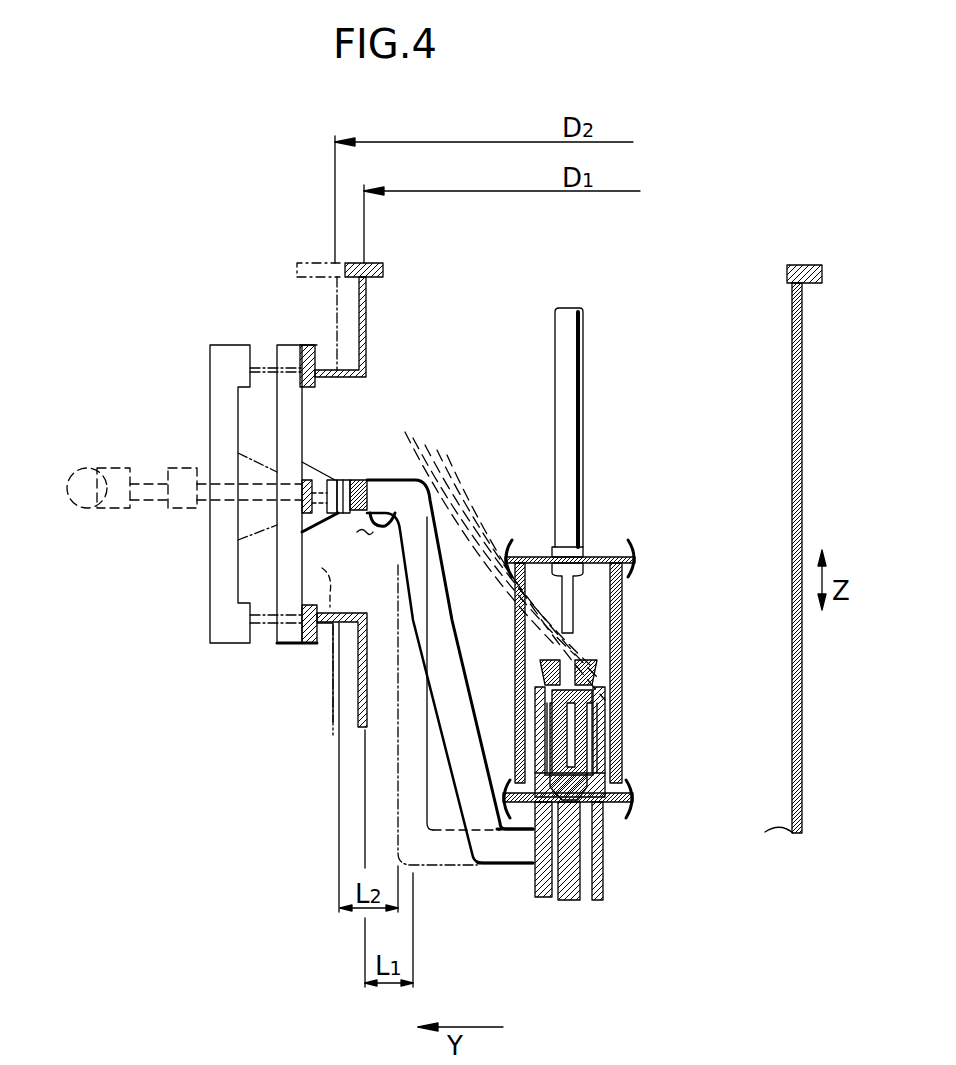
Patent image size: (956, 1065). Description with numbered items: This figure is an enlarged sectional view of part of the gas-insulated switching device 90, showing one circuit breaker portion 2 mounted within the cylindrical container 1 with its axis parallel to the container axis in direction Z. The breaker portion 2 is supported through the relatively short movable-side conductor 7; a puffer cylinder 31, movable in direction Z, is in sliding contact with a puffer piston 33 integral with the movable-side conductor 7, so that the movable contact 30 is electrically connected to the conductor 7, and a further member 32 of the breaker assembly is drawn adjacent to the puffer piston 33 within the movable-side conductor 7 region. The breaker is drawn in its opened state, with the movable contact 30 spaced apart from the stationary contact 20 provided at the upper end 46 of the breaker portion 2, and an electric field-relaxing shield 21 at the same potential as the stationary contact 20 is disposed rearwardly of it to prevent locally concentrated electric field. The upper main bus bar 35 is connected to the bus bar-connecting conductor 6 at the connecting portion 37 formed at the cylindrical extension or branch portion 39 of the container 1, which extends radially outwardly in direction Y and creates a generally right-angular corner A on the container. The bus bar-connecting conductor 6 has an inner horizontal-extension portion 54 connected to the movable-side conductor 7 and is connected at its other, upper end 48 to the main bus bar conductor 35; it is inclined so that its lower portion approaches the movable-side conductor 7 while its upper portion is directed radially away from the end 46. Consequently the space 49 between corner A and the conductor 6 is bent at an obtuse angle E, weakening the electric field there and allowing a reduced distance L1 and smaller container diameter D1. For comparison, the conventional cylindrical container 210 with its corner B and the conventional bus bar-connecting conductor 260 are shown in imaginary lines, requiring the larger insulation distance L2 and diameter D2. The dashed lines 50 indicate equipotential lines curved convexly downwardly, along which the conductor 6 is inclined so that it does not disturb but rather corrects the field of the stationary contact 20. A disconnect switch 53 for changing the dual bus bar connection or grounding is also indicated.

The cylindrical container 1 is at (802, 472).
The circuit breaker portion 2 is at (620, 710).
The bus bar-connecting conductor 6 is at (428, 507).
The movable-side conductor 7 is at (603, 878).
The stationary contact 20 is at (618, 606).
The electric field-relaxing shield 21 is at (505, 555).
The movable contact 30 is at (590, 680).
The puffer cylinder 31 is at (605, 747).
The valve stem 32 is at (580, 807).
The puffer piston 33 is at (590, 776).
The main bus bar 35 is at (115, 467).
The connecting portion 37 is at (275, 630).
The cylindrical extension 39 is at (364, 378).
The upper end of breaker portion 46 is at (575, 547).
The other end of bus bar-connecting conductor 48 is at (362, 480).
The space 49 is at (390, 607).
The equipotential lines 50 is at (427, 433).
The disconnect switch 53 is at (176, 508).
The inner horizontal-extension portion 54 is at (500, 868).
The switching device 90 is at (770, 893).
The conventional cylindrical container 210 is at (330, 653).
The conventional bus bar-connecting conductor 260 is at (448, 862).